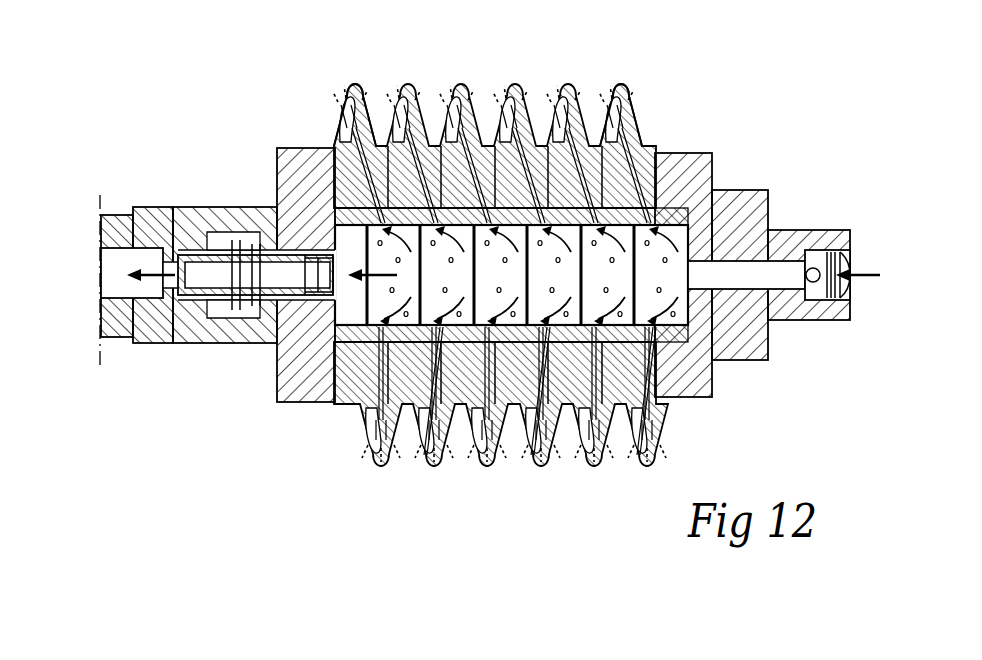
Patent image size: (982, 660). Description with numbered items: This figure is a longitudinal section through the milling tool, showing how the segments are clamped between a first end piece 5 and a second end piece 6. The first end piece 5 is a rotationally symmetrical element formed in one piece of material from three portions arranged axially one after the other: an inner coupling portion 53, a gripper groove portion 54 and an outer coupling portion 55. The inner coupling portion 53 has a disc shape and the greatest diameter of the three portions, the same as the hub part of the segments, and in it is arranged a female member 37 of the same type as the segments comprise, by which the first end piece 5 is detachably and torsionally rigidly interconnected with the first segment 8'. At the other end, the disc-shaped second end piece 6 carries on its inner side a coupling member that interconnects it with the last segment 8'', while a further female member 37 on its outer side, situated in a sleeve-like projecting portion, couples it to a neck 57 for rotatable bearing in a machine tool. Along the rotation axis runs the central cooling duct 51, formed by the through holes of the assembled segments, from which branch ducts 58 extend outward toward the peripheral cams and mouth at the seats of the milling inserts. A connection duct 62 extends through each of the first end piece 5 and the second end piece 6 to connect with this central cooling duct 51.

The first end piece 5 is at (752, 277).
The second end piece 6 is at (300, 390).
The first segment 8' is at (648, 101).
The last segment 8'' is at (324, 106).
The female member 37 is at (222, 340).
The cooling duct 51 is at (672, 280).
The inner coupling portion 53 is at (692, 398).
The gripper groove portion 54 is at (752, 362).
The outer coupling portion 55 is at (815, 321).
The neck 57 is at (118, 323).
The branch duct 58 is at (487, 140).
The connection duct 62 is at (200, 272).